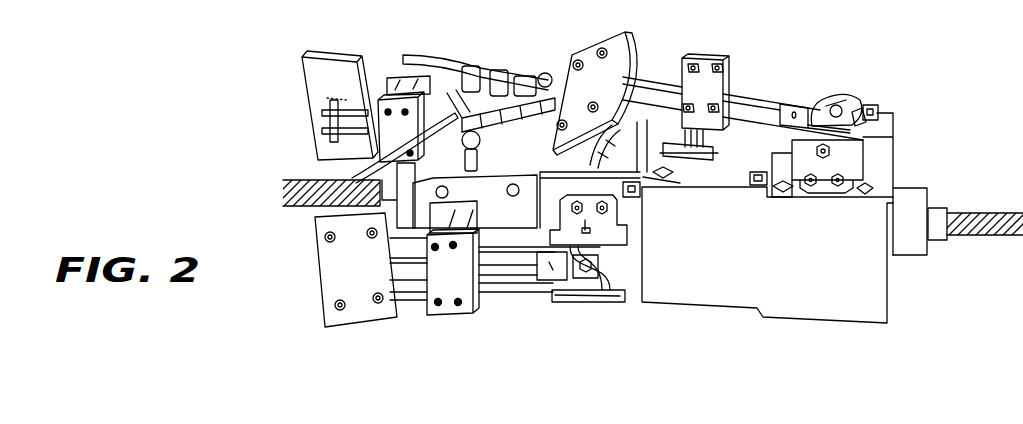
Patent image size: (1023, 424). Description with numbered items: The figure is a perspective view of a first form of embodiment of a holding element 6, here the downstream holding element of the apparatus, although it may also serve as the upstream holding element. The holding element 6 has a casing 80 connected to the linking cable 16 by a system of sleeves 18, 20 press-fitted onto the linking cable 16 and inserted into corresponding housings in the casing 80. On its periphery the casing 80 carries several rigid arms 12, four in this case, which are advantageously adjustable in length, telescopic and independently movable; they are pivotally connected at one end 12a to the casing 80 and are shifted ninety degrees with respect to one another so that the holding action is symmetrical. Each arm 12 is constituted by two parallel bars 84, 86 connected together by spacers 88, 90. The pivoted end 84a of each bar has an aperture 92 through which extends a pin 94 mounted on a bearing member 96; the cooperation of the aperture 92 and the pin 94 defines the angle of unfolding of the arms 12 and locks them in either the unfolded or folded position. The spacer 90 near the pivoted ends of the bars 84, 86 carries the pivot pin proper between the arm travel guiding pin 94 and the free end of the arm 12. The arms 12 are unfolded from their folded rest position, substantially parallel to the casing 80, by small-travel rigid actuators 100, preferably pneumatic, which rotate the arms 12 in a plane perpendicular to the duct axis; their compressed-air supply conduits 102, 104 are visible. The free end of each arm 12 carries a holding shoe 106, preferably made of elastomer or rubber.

The holding element 6 is at (598, 316).
The rigid arms 12 is at (748, 106).
The arm end 12a is at (817, 108).
The linking cable 16 is at (975, 208).
The sleeve 18 is at (927, 193).
The sleeve 20 is at (350, 179).
The casing 80 is at (868, 293).
The bar 84 is at (783, 100).
The pivoted end of bar 84a is at (858, 100).
The bar 86 is at (877, 110).
The spacer 88 is at (688, 63).
The spacer 90 is at (857, 135).
The aperture 92 is at (830, 110).
The pin 94 is at (822, 190).
The bearing member 96 is at (845, 187).
The rigid actuators 100 is at (698, 172).
The compressed-air supply conduit 102 is at (418, 62).
The compressed-air supply conduit 104 is at (480, 133).
The holding shoes 106 is at (318, 73).